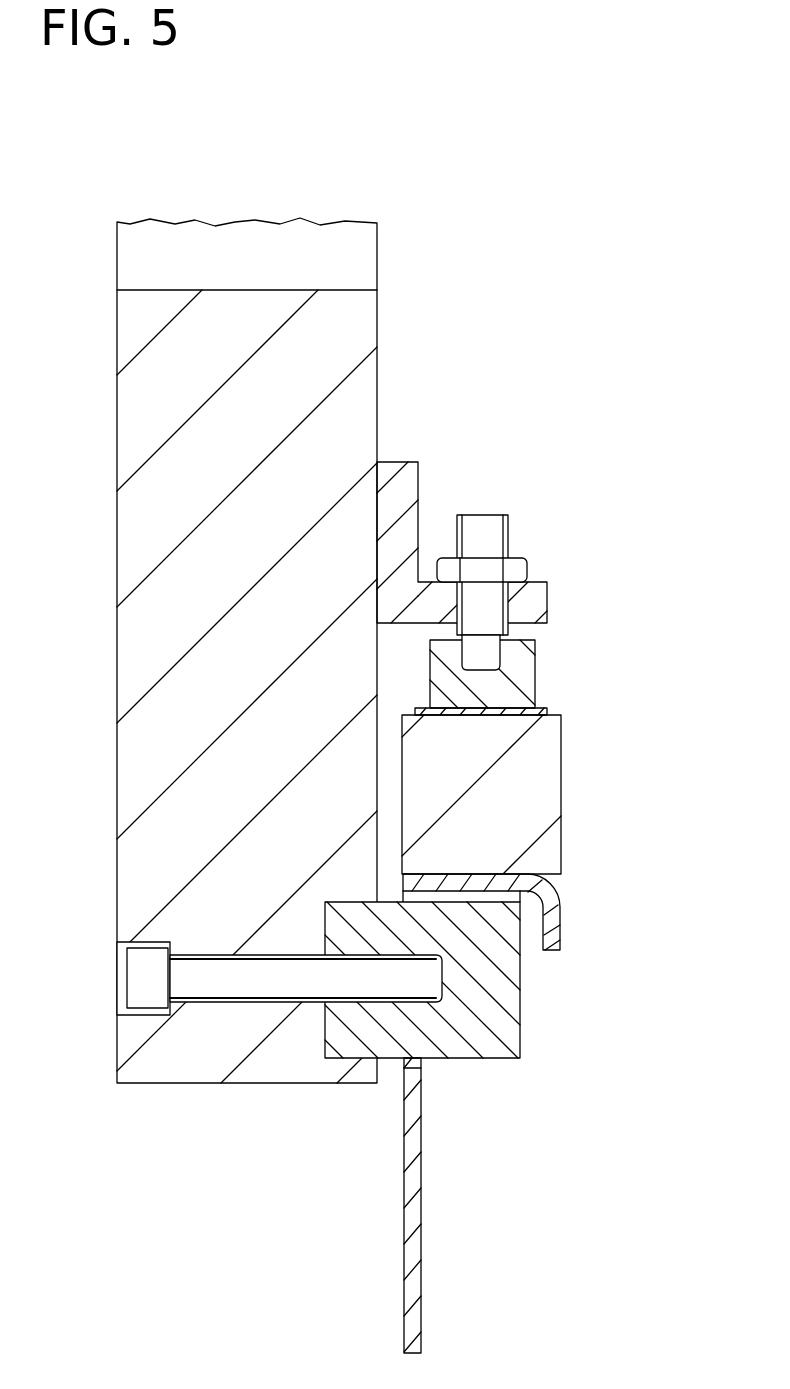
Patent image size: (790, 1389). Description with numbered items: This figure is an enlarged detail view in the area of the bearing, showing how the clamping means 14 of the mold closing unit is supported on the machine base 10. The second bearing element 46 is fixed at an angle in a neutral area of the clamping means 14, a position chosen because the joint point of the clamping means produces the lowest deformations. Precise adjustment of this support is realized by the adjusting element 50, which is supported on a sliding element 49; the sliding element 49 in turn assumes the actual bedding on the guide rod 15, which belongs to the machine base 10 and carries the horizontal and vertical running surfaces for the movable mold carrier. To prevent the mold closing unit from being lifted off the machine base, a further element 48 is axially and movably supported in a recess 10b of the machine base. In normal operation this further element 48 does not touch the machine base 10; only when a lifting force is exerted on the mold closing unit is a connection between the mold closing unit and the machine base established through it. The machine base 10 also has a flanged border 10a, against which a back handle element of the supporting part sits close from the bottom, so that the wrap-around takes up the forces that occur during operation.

The clamping means 14 is at (355, 346).
The second bearing element 46 is at (594, 719).
The adjusting element 50 is at (483, 540).
The sliding element 49 is at (518, 683).
The guide rod 15 is at (508, 822).
The flanged border 10a is at (560, 925).
The further element 48 is at (480, 1017).
The machine base 10 is at (412, 1210).
The recess 10b is at (408, 1063).